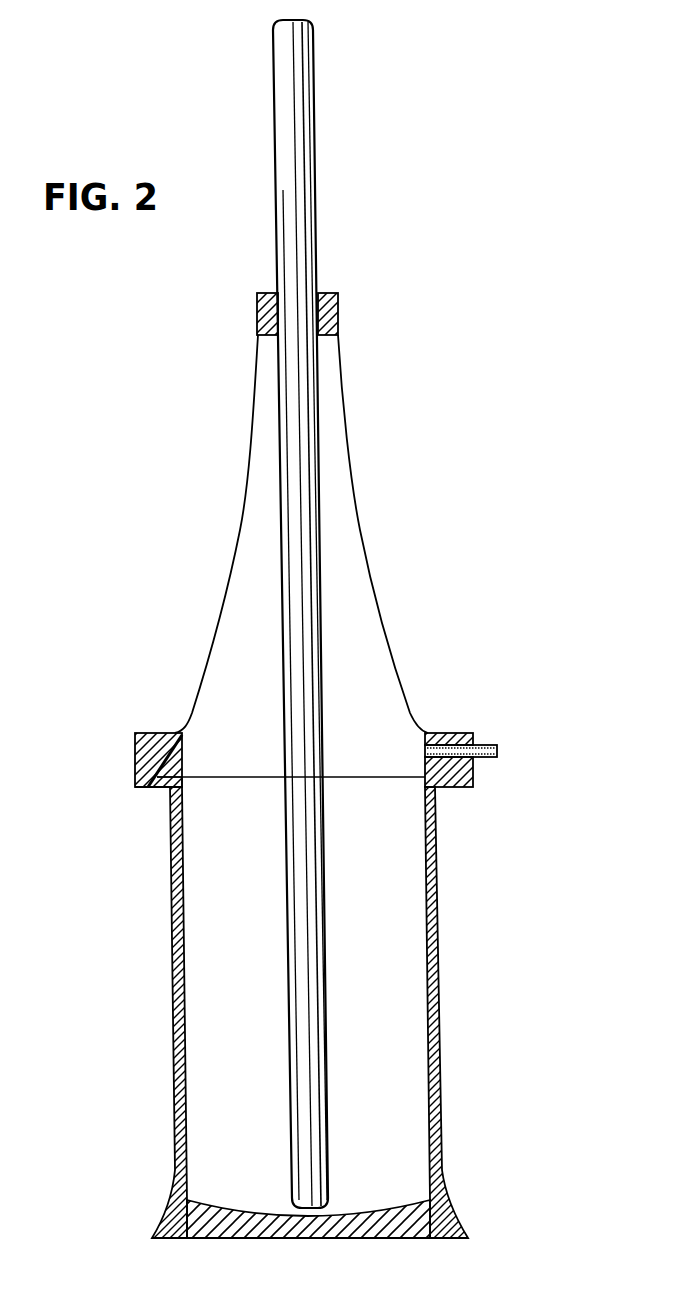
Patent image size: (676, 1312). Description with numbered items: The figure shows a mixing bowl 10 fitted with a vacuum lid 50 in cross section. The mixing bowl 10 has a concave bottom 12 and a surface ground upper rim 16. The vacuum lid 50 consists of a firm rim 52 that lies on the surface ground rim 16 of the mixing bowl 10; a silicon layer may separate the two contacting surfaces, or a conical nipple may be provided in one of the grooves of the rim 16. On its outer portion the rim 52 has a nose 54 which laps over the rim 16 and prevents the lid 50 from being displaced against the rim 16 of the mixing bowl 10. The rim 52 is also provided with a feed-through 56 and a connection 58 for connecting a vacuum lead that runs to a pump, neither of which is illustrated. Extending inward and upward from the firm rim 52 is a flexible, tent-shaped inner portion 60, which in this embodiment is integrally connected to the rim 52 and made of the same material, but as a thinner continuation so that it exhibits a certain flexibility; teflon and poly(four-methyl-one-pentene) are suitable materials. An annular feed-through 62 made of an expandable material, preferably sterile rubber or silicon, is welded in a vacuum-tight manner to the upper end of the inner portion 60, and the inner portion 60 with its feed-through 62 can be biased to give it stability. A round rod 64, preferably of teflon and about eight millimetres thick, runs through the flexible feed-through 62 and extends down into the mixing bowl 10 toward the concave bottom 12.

The mixing bowl 10 is at (448, 930).
The concave bottom 12 is at (387, 1203).
The surface ground upper rim 16 is at (167, 788).
The vacuum lid 50 is at (470, 727).
The firm rim 52 is at (152, 729).
The nose 54 is at (143, 787).
The feed-through 56 is at (445, 755).
The connection 58 is at (497, 757).
The flexible tent-shaped inner portion 60 is at (352, 463).
The annular feed-through 62 is at (338, 303).
The round rod 64 is at (302, 148).